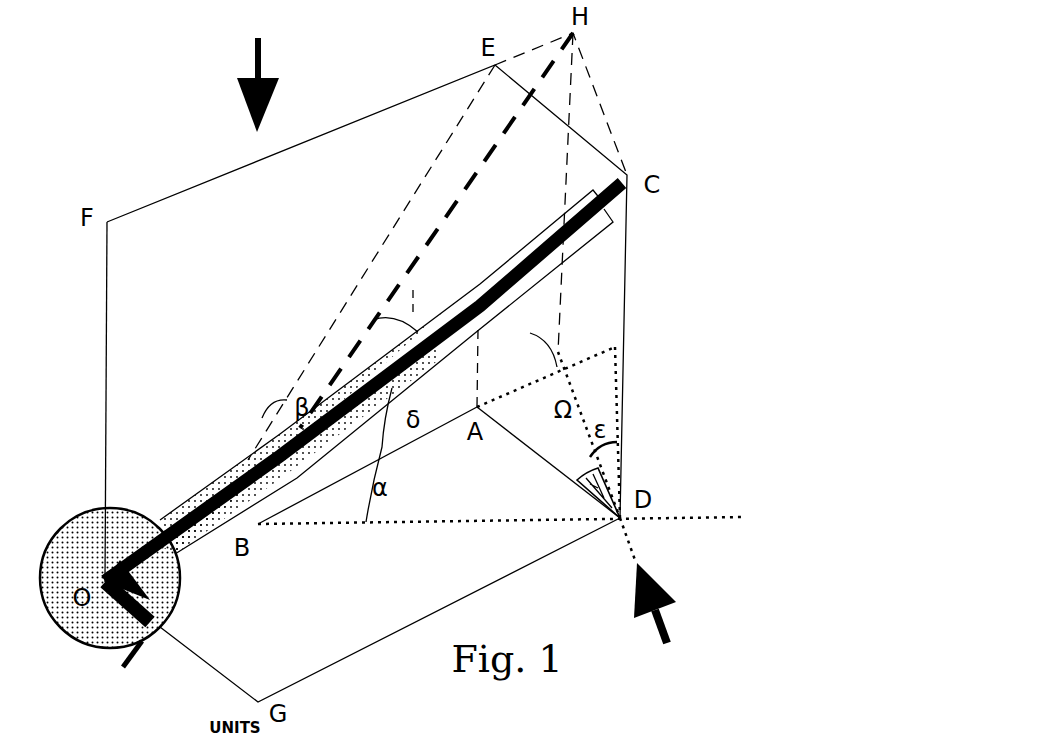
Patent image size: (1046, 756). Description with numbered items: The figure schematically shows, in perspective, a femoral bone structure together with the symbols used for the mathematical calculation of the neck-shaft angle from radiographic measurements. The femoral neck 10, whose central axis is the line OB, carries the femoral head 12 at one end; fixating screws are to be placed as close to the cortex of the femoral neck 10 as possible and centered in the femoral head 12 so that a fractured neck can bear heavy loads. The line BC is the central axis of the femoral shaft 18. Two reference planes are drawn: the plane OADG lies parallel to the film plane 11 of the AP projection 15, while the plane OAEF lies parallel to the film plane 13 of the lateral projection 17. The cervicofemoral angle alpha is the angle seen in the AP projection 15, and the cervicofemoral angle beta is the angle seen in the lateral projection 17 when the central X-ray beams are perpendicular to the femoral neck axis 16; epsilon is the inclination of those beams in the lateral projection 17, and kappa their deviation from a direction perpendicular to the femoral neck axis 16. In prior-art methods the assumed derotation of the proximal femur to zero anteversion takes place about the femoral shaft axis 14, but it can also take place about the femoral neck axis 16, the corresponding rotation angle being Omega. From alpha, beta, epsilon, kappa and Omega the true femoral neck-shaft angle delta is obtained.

The femoral neck 10 is at (177, 513).
The film plane in the AP projection 11 is at (327, 668).
The femoral head 12 is at (75, 513).
The film plane in the lateral projection 13 is at (152, 203).
The femoral shaft axis 14 is at (297, 480).
The AP projection 15 is at (263, 60).
The femoral neck axis 16 is at (114, 635).
The lateral projection 17 is at (670, 630).
The femoral shaft 18 is at (377, 362).